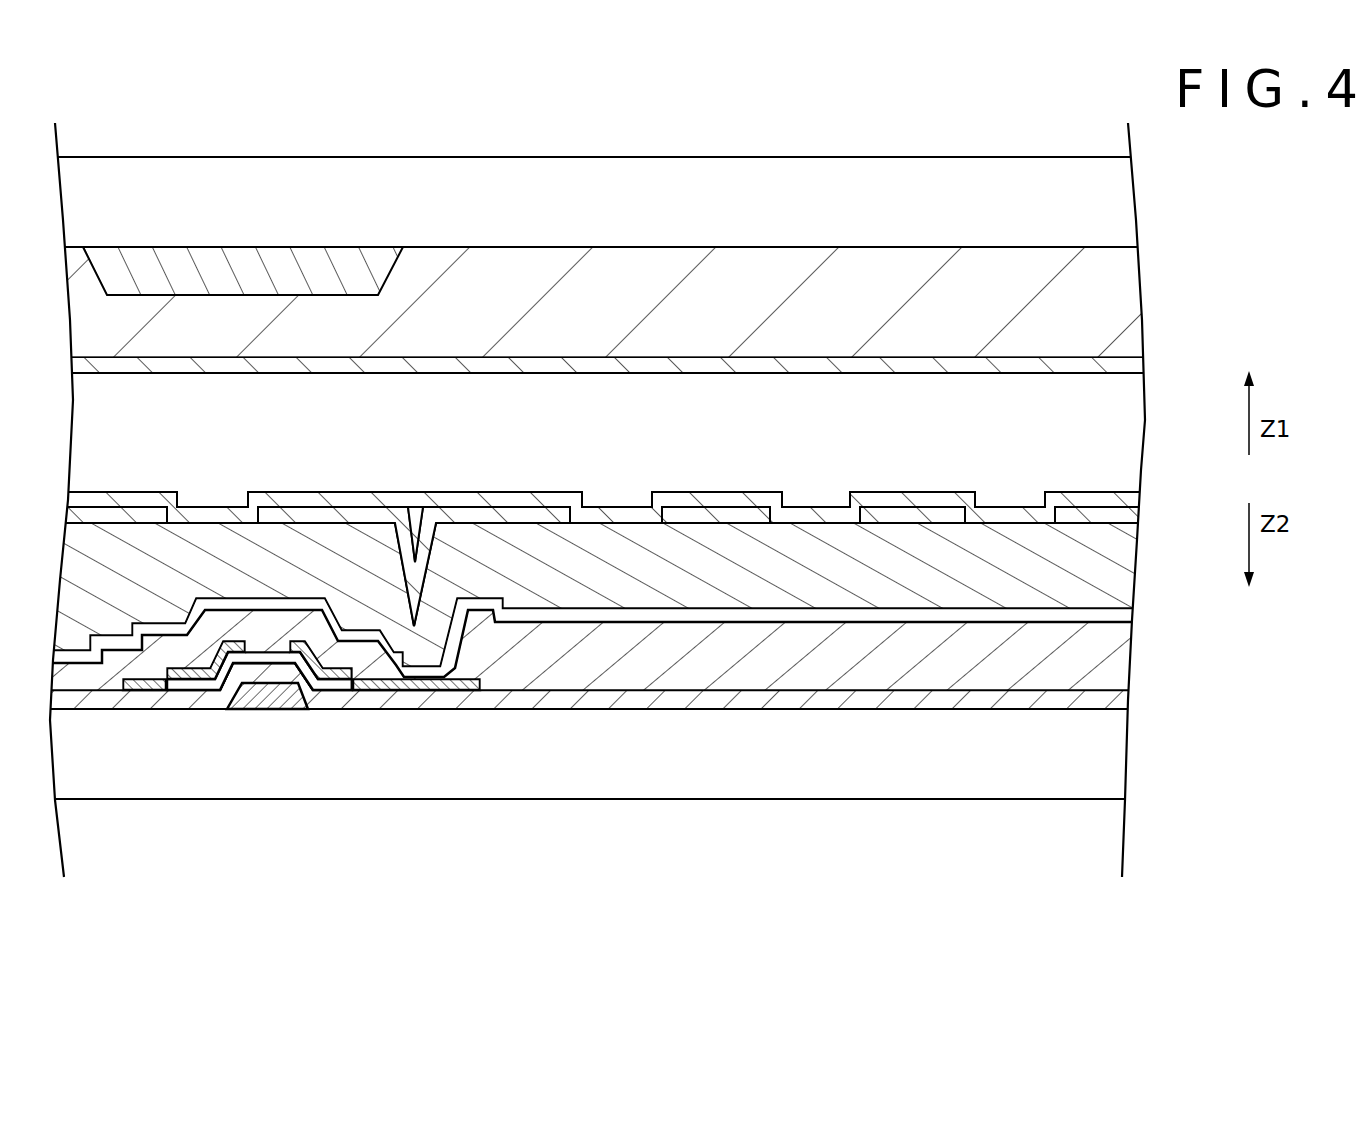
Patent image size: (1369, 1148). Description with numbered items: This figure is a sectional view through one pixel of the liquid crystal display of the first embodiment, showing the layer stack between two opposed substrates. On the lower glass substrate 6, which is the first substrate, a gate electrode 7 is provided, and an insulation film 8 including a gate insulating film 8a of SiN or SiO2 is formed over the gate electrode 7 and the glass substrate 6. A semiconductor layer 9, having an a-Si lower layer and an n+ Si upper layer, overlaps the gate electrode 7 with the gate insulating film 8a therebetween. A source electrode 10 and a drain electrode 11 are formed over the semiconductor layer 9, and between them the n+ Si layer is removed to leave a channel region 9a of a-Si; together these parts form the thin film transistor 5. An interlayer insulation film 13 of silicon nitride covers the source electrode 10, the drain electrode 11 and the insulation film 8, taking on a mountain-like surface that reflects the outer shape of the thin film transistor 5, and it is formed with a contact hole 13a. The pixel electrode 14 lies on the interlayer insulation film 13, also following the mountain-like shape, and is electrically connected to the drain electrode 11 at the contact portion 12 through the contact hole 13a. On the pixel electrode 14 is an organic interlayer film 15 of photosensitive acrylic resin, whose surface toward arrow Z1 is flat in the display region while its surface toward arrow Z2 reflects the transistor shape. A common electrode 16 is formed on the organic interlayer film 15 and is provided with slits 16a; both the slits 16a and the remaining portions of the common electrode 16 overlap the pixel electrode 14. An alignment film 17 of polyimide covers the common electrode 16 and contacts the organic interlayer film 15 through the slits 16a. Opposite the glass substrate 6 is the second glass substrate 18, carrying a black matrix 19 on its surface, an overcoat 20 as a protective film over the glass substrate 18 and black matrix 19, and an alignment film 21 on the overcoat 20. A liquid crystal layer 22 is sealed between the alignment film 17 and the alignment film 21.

The thin film transistor 5 is at (300, 701).
The glass substrate 6 is at (1103, 757).
The gate electrode 7 is at (300, 700).
The insulation film 8 is at (620, 770).
The gate insulating film 8a is at (243, 676).
The semiconductor layer 9 is at (205, 686).
The channel region 9a is at (259, 672).
The source electrode 10 is at (150, 689).
The drain electrode 11 is at (356, 682).
The contact portion 12 is at (398, 687).
The interlayer insulation film 13 is at (627, 738).
The contact hole 13a is at (430, 672).
The pixel electrode 14 is at (1107, 615).
The organic interlayer film 15 is at (1105, 570).
The common electrode 16 is at (123, 516).
The slits 16a is at (186, 507).
The alignment film 17 is at (1105, 500).
The glass substrate 18 is at (1105, 215).
The black matrix 19 is at (243, 267).
The overcoat 20 is at (1105, 300).
The alignment film 21 is at (1105, 366).
The liquid crystal layer 22 is at (1122, 440).